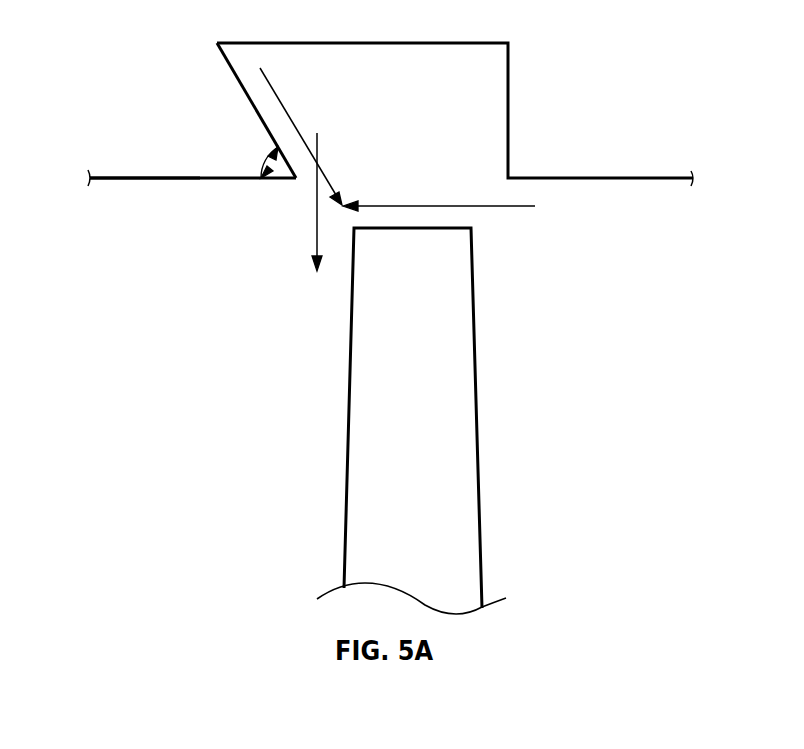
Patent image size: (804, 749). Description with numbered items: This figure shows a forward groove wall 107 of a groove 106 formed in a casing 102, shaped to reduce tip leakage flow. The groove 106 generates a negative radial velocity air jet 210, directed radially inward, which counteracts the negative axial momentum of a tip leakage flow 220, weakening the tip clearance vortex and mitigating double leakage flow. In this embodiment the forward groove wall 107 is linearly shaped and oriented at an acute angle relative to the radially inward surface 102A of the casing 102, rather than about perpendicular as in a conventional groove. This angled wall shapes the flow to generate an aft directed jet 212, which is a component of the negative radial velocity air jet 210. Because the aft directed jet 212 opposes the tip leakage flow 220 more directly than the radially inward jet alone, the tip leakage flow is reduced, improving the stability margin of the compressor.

The groove 106 is at (297, 42).
The forward groove wall 107 is at (227, 58).
The casing 102 is at (165, 178).
The radially inward surface 102A is at (112, 182).
The negative radial velocity air jet 210 is at (317, 203).
The aft directed jet 212 is at (283, 106).
The tip leakage flow 220 is at (497, 208).